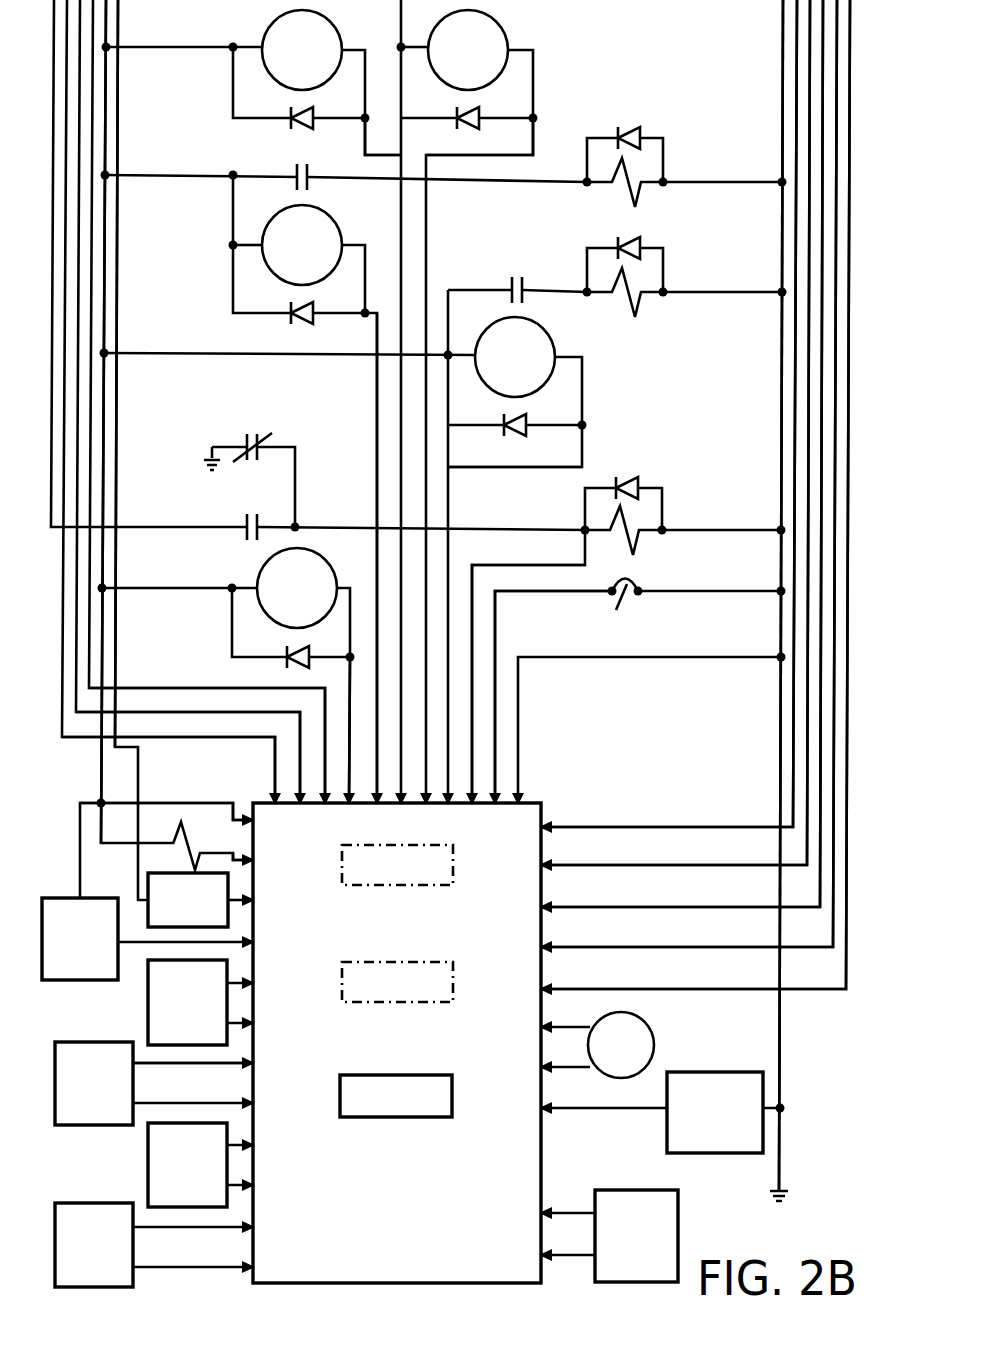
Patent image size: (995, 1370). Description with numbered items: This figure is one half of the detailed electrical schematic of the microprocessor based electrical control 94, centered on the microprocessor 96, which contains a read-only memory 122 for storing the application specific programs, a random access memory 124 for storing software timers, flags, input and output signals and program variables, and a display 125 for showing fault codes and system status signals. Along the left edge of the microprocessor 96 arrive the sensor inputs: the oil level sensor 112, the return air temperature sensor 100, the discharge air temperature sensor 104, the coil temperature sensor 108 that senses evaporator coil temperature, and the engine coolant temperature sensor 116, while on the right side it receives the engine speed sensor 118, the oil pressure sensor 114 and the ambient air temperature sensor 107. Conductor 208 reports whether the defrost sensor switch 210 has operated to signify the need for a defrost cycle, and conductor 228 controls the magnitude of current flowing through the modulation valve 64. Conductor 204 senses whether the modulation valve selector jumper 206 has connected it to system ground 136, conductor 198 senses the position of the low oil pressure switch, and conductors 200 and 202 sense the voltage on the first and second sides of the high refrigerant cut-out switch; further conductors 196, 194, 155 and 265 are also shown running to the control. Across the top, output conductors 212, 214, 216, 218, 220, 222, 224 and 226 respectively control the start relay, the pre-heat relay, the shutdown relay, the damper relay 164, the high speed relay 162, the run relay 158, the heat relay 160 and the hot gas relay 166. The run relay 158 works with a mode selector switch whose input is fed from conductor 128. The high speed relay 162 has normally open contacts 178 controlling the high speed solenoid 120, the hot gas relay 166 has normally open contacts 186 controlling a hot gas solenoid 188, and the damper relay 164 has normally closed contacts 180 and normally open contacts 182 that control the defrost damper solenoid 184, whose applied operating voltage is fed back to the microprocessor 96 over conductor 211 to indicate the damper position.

The microprocessor 96 is at (543, 1132).
The read-only memory (ROM) 122 is at (453, 882).
The random access memory (RAM) 124 is at (453, 998).
The display 125 is at (452, 1098).
The run relay 158 is at (375, 29).
The heat relay 160 is at (552, 29).
The high speed relay 162 is at (373, 222).
The hot gas relay 166 is at (592, 345).
The defrost damper relay 164 is at (365, 569).
The normally open contacts 178 is at (298, 166).
The normally open contacts 186 is at (515, 278).
The normally closed contacts 180 is at (252, 432).
The normally open contacts 182 is at (248, 514).
The high speed solenoid 120 is at (624, 197).
The hot gas solenoid 188 is at (625, 283).
The defrost damper solenoid 184 is at (627, 522).
The modulation valve selector jumper 206 is at (672, 613).
The conductor 222 is at (364, 140).
The conductor 224 is at (532, 140).
The conductor 220 is at (375, 372).
The conductor 226 is at (463, 468).
The conductor 211 is at (478, 566).
The conductor 204 is at (578, 594).
The conductor 218 is at (347, 685).
The conductor 216 is at (133, 687).
The conductor 214 is at (88, 714).
The conductor 212 is at (95, 739).
The power line 155 is at (108, 210).
The conductor 128 is at (119, 267).
The input line 265 is at (250, 815).
The modulation valve 64 is at (178, 833).
The conductor 228 is at (256, 855).
The conductor 208 is at (257, 897).
The defrost sensor switch 210 is at (148, 912).
The oil level sensor 112 is at (92, 982).
The return air temperature sensor 100 is at (148, 995).
The discharge air temperature sensor 104 is at (78, 1127).
The microprocessor based electrical control 94 is at (79, 1168).
The coil temperature sensor 108 is at (148, 1151).
The engine coolant temperature sensor 116 is at (92, 1203).
The engine speed (RPM) sensor 118 is at (652, 1050).
The oil pressure sensor 114 is at (667, 1134).
The system ground 136 is at (779, 1089).
The ambient air temperature sensor 107 is at (678, 1213).
The conductor 202 is at (760, 830).
The conductor 200 is at (762, 868).
The conductor 198 is at (771, 910).
The output line 196 is at (769, 951).
The output line 194 is at (788, 991).